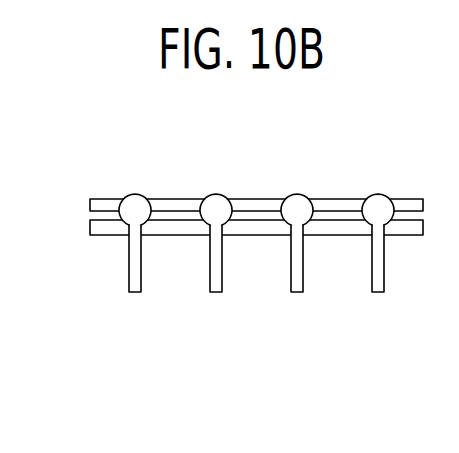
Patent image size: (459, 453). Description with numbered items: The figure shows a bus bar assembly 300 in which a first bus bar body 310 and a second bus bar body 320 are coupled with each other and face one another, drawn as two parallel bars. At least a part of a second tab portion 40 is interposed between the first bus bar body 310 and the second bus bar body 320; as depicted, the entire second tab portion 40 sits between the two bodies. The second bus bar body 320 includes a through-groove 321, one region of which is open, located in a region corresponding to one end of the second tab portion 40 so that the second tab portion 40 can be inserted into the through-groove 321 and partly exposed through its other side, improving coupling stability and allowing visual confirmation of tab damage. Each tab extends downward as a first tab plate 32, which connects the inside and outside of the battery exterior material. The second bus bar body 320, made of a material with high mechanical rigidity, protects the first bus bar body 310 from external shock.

The bus bar assembly 300 is at (223, 292).
The first bus bar body 310 is at (91, 227).
The second bus bar body 320 is at (91, 204).
The through-groove 321 is at (236, 164).
The first tab plate 32 is at (129, 266).
The second tab portion 40 is at (126, 196).